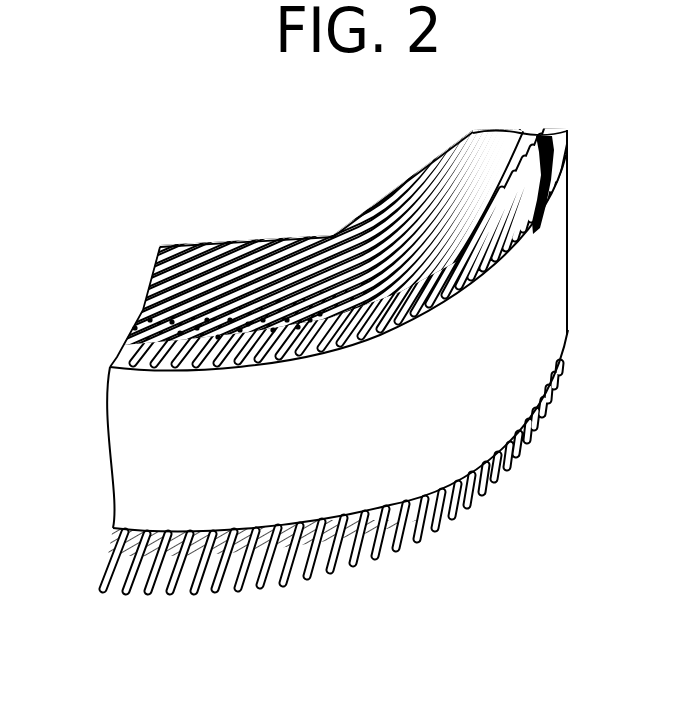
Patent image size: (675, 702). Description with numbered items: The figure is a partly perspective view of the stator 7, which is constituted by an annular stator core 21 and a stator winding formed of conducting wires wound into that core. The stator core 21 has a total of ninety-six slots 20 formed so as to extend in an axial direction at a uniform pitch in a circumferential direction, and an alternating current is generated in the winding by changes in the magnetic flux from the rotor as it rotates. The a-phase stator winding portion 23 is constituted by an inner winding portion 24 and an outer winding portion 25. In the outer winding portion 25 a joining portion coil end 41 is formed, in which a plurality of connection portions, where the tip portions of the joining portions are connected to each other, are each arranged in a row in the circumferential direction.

The stator 7 is at (567, 287).
The slots 20 is at (547, 178).
The stator core 21 is at (527, 353).
The a-phase stator winding portion 23 is at (532, 131).
The inner winding portion 24 is at (440, 183).
The outer winding portion 25 is at (143, 312).
The joining portion coil end 41 is at (490, 500).